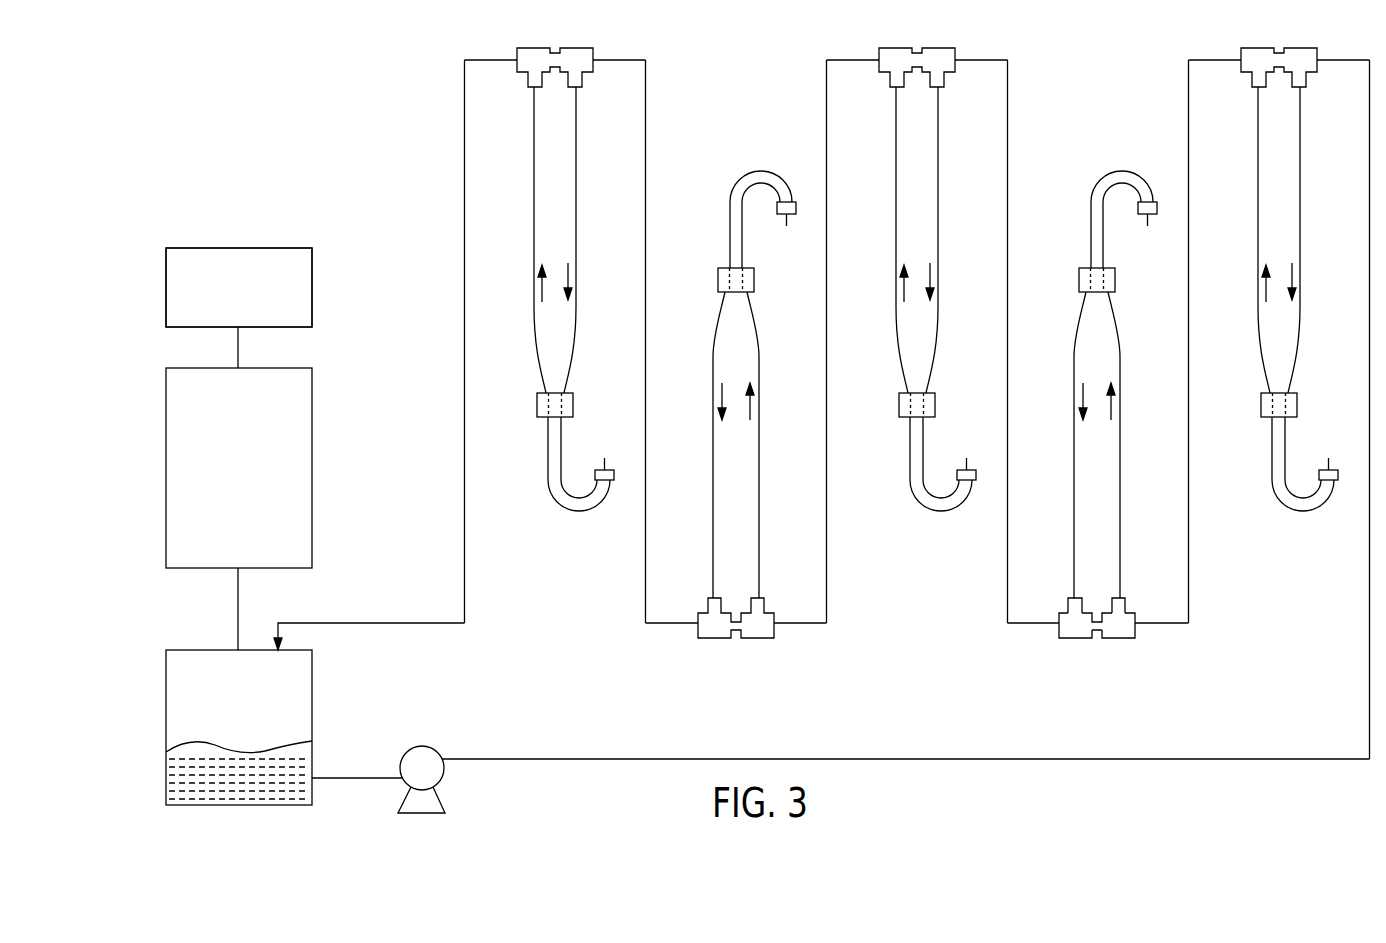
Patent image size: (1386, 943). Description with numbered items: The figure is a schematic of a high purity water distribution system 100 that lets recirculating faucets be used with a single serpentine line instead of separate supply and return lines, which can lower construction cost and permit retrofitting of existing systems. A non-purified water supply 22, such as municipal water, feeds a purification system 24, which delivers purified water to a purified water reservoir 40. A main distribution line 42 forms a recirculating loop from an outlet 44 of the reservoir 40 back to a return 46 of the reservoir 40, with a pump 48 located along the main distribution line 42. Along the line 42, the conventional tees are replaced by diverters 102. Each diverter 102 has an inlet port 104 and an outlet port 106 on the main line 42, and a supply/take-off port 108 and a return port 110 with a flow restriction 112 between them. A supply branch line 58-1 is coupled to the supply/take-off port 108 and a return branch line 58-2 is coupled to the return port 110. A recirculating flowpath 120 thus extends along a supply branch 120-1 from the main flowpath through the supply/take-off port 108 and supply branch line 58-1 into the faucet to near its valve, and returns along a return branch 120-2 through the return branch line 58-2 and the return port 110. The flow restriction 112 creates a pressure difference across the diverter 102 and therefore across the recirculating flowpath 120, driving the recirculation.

The high purity water distribution system 100 is at (186, 191).
The non-purified water supply 22 is at (239, 287).
The purification system 24 is at (239, 468).
The purified water reservoir 40 is at (239, 727).
The main distribution line 42 is at (975, 759).
The outlet 44 is at (312, 778).
The return 46 is at (283, 636).
The pump 48 is at (421, 779).
The recirculating flowpath 120 is at (1097, 384).
The supply branch 120-1 is at (1127, 336).
The return branch 120-2 is at (1068, 352).
The supply branch line 58-1 is at (1120, 472).
The return branch line 58-2 is at (1075, 472).
The diverter 102 is at (1102, 637).
The inlet port 104 is at (1135, 628).
The outlet port 106 is at (1058, 628).
The supply/take-off port 108 is at (1125, 598).
The return port 110 is at (1070, 598).
The flow restriction 112 is at (1097, 625).